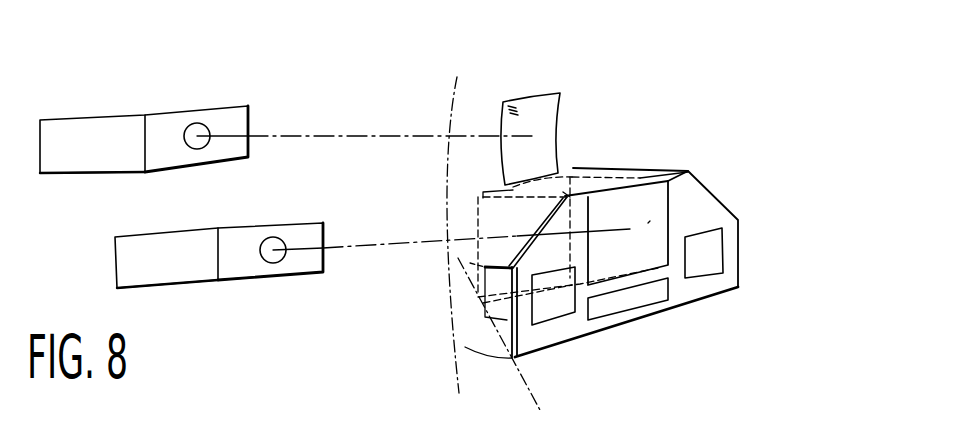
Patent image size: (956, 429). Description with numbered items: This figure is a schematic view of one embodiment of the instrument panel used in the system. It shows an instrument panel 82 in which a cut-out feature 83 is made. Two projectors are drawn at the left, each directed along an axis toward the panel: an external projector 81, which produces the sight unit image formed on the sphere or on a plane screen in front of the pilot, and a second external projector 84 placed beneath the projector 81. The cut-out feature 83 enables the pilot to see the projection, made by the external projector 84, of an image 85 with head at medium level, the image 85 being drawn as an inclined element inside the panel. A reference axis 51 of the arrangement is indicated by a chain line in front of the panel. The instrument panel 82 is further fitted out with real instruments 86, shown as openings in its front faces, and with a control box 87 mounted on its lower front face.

The optical axis 51 is at (452, 93).
The external projector 81 is at (155, 113).
The instrument panel 82 is at (698, 177).
The cut-out feature 83 is at (648, 223).
The external projector 84 is at (252, 283).
The image with head at medium level 85 is at (513, 224).
The real instruments 86 is at (547, 310).
The control box 87 is at (625, 302).